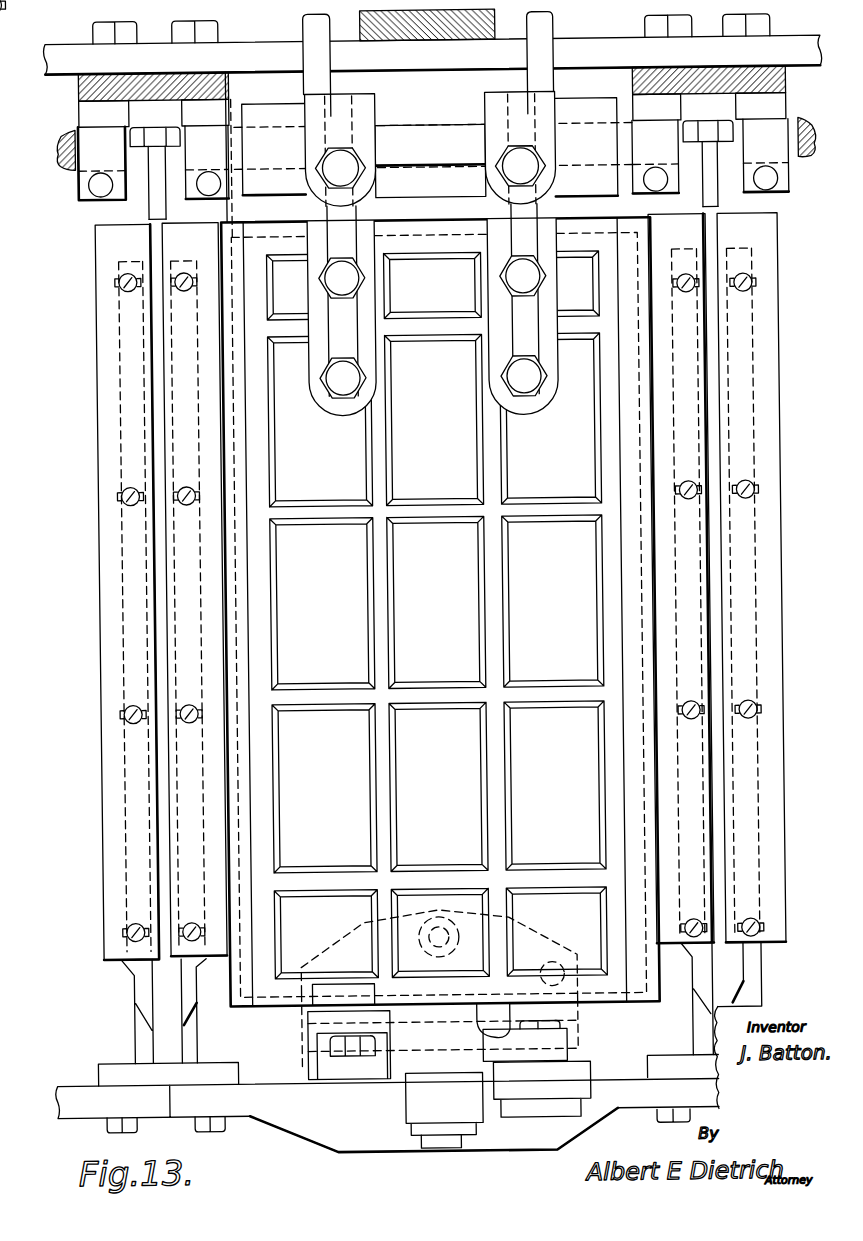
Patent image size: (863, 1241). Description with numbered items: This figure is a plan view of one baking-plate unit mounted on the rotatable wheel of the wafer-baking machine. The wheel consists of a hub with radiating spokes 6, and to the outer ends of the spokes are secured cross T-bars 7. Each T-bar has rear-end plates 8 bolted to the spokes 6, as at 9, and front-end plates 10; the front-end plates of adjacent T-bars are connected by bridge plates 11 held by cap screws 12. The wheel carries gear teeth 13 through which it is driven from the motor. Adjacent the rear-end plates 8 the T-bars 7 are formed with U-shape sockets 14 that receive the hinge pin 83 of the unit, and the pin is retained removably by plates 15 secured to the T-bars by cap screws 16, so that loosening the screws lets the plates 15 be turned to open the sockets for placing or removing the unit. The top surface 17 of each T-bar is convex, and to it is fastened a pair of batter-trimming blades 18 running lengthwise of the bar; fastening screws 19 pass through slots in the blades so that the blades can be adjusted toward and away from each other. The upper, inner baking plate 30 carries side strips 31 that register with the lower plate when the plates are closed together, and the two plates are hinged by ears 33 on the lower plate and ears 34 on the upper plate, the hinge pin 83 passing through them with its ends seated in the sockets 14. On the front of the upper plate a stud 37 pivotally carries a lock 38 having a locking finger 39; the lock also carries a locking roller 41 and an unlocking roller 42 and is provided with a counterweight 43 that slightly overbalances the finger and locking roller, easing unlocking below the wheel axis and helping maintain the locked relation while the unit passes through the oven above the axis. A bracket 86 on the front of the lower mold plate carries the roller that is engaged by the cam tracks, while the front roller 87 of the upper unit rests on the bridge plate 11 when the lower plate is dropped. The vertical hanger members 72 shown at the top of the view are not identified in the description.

The spokes 6 is at (196, 71).
The cross T-bars 7 is at (165, 566).
The rear-end plates 8 is at (212, 112).
The bolts 9 is at (160, 138).
The front-end plates 10 is at (106, 1072).
The bridge plates 11 is at (340, 1138).
The cap screws 12 is at (224, 1128).
The gear teeth 13 is at (617, 32).
The U-shape sockets 14 is at (100, 196).
The plates 15 is at (210, 176).
The cap screws 16 is at (194, 200).
The top surface 17 is at (166, 963).
The batter-trimming blades 18 is at (100, 456).
The fastening screws 19 is at (182, 290).
The upper baking plate 30 is at (440, 604).
The side strips 31 is at (228, 452).
The ears 33 is at (430, 152).
The ears 34 is at (386, 143).
The front stud 37 is at (443, 1148).
The lock 38 is at (447, 1042).
The locking finger 39 is at (483, 1028).
The locking roller 41 is at (543, 1088).
The unlocking roller 42 is at (372, 986).
The counterweight 43 is at (306, 1042).
The hanger rod 72 is at (310, 50).
The hinge pin 83 is at (74, 132).
The bracket 86 is at (494, 924).
The front roller 87 is at (417, 1104).